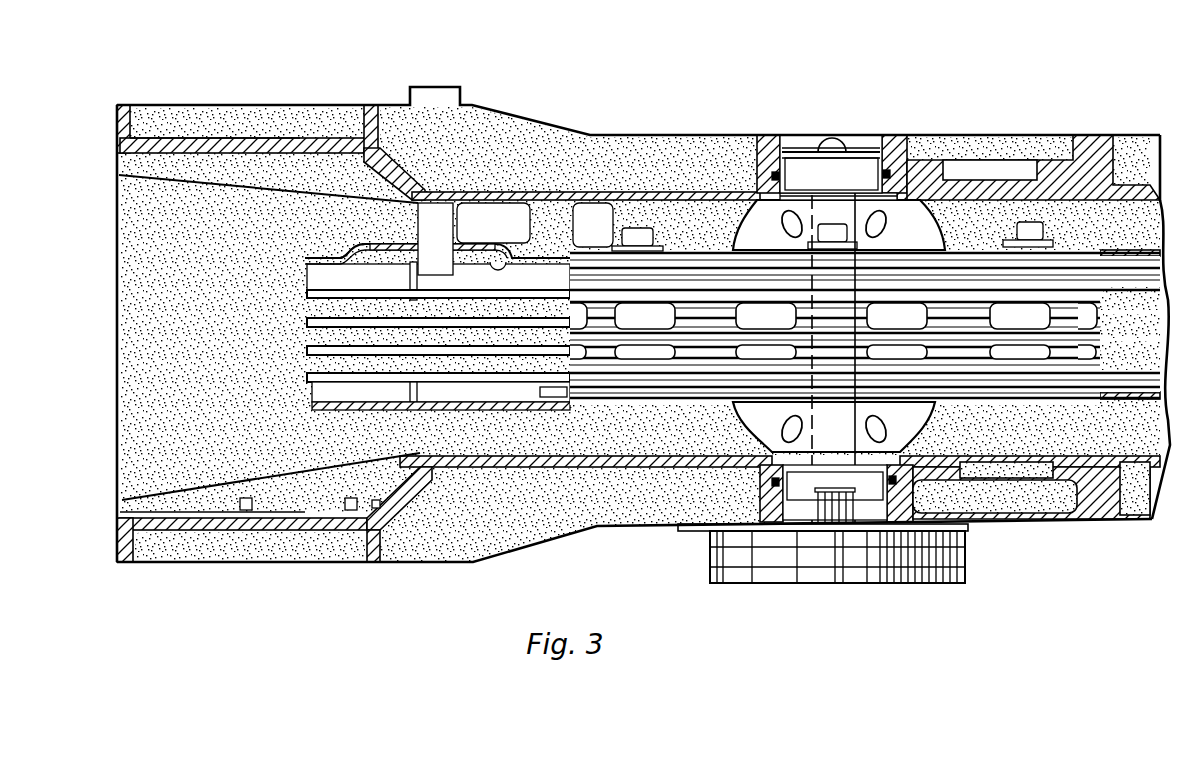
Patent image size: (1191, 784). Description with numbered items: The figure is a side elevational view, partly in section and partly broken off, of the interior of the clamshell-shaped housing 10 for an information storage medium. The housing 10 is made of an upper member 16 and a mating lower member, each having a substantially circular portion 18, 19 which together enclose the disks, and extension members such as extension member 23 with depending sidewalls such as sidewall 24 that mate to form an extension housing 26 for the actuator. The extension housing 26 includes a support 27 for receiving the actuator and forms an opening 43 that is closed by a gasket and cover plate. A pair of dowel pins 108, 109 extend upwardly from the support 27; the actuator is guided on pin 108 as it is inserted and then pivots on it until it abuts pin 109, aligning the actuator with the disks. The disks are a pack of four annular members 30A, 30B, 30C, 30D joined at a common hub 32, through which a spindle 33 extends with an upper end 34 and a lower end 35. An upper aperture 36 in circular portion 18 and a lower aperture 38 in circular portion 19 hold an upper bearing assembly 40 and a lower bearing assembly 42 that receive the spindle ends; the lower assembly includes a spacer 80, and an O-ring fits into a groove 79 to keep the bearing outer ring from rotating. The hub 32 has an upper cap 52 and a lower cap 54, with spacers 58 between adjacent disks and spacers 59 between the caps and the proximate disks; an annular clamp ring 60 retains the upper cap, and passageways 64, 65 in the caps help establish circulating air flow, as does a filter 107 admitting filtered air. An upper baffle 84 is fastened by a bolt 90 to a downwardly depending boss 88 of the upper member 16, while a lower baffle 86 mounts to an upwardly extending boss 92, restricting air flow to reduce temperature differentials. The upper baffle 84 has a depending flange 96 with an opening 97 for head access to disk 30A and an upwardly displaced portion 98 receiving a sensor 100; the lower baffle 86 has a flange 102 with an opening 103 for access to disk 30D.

The housing 10 is at (518, 58).
The upper member 16 is at (369, 104).
The circular portion 18 is at (375, 563).
The circular portion 19 is at (600, 528).
The extension member 23 is at (192, 104).
The depending sidewall 24 is at (116, 128).
The extension housing 26 is at (115, 547).
The support 27 is at (156, 75).
The annular member 30A is at (306, 294).
The annular member 30B is at (306, 322).
The annular member 30C is at (306, 350).
The annular member 30D is at (306, 377).
The hub 32 is at (832, 375).
The spindle 33 is at (825, 530).
The upper end 34 is at (860, 175).
The lower end 35 is at (852, 535).
The upper aperture 36 is at (781, 132).
The lower aperture 38 is at (790, 510).
The upper bearing assembly 40 is at (792, 170).
The lower bearing assembly 42 is at (880, 478).
The opening 43 is at (113, 300).
The upper cap 52 is at (745, 232).
The lower cap 54 is at (920, 420).
The spacers 58 is at (568, 299).
The spacers 59 is at (587, 272).
The annular clamp ring 60 is at (672, 250).
The passageways 64 is at (786, 226).
The passageways 65 is at (786, 431).
The groove 79 is at (770, 176).
The spacer 80 is at (780, 481).
The upper baffle 84 is at (330, 257).
The lower baffle 86 is at (362, 410).
The boss 88 is at (494, 223).
The bolt 90 is at (527, 273).
The boss 92 is at (530, 412).
The flange 96 is at (409, 277).
The opening 97 is at (326, 278).
The upwardly displaced portion 98 is at (372, 250).
The sensor 100 is at (453, 222).
The flange 102 is at (438, 428).
The opening 103 is at (312, 390).
The filter 107 is at (990, 158).
The dowel pin 108 is at (246, 497).
The dowel pin 109 is at (350, 497).